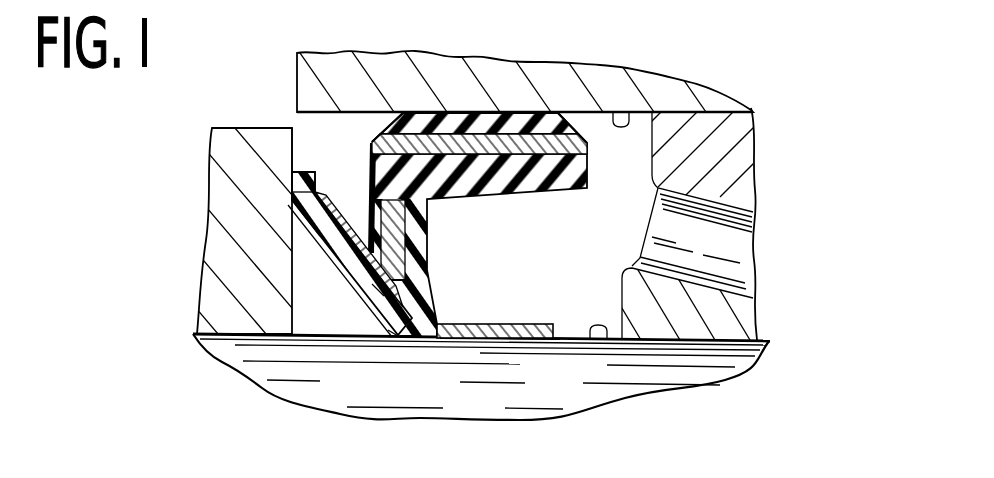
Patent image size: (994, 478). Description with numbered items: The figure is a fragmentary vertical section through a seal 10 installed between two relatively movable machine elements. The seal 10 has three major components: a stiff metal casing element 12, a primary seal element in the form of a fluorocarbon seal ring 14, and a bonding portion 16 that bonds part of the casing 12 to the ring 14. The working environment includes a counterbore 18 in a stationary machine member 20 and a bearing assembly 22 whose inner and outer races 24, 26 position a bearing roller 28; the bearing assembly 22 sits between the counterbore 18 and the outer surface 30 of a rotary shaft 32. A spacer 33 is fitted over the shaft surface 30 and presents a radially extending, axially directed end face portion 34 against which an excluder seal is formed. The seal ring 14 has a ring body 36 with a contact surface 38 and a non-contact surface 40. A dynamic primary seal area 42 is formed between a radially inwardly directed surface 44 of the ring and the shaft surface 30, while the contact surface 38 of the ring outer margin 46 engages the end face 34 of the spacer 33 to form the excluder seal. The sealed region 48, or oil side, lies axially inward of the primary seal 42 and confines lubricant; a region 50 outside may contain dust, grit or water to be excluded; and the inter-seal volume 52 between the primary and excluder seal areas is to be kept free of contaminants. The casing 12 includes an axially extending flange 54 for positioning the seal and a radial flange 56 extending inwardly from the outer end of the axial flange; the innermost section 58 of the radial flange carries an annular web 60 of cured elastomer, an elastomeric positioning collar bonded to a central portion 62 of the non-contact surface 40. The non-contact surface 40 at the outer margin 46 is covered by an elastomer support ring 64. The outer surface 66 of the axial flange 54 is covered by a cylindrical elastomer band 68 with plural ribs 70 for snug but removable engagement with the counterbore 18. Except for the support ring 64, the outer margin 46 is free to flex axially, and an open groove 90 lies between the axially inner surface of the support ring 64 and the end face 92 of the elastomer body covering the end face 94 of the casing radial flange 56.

The seal 10 is at (566, 208).
The casing element 12 is at (483, 120).
The fluorocarbon seal ring 14 is at (315, 310).
The bonding portion 16 is at (459, 299).
The counterbore 18 is at (625, 112).
The stationary machine member 20 is at (597, 86).
The bearing assembly 22 is at (786, 178).
The inner race 24 is at (727, 310).
The outer race 26 is at (746, 148).
The bearing roller 28 is at (741, 242).
The outer surface of rotary shaft 30 is at (604, 340).
The rotary shaft 32 is at (523, 395).
The spacer 33 is at (217, 280).
The end face portion 34 is at (297, 141).
The ring body 36 is at (407, 333).
The contact face 38 is at (379, 290).
The non-contact face 40 is at (478, 325).
The dynamic primary seal area 42 is at (370, 186).
The radially inwardly directed surface 44 is at (518, 339).
The ring outer margin 46 is at (308, 210).
The sealed region 48 is at (624, 254).
The outside region 50 is at (347, 143).
The inter-seal volume 52 is at (322, 282).
The axially extending flange 54 is at (437, 140).
The radial flange 56 is at (393, 233).
The innermost section 58 is at (392, 280).
The annular web of cured elastomer 60 is at (390, 332).
The central portion 62 is at (378, 288).
The support ring 64 is at (323, 237).
The outer surface of axial casing flange 66 is at (507, 145).
The cylindrical band 68 is at (549, 136).
The ribs 70 is at (516, 134).
The groove 90 is at (347, 203).
The end face of elastomer body 92 is at (322, 250).
The end face of casing radial flange 94 is at (370, 152).